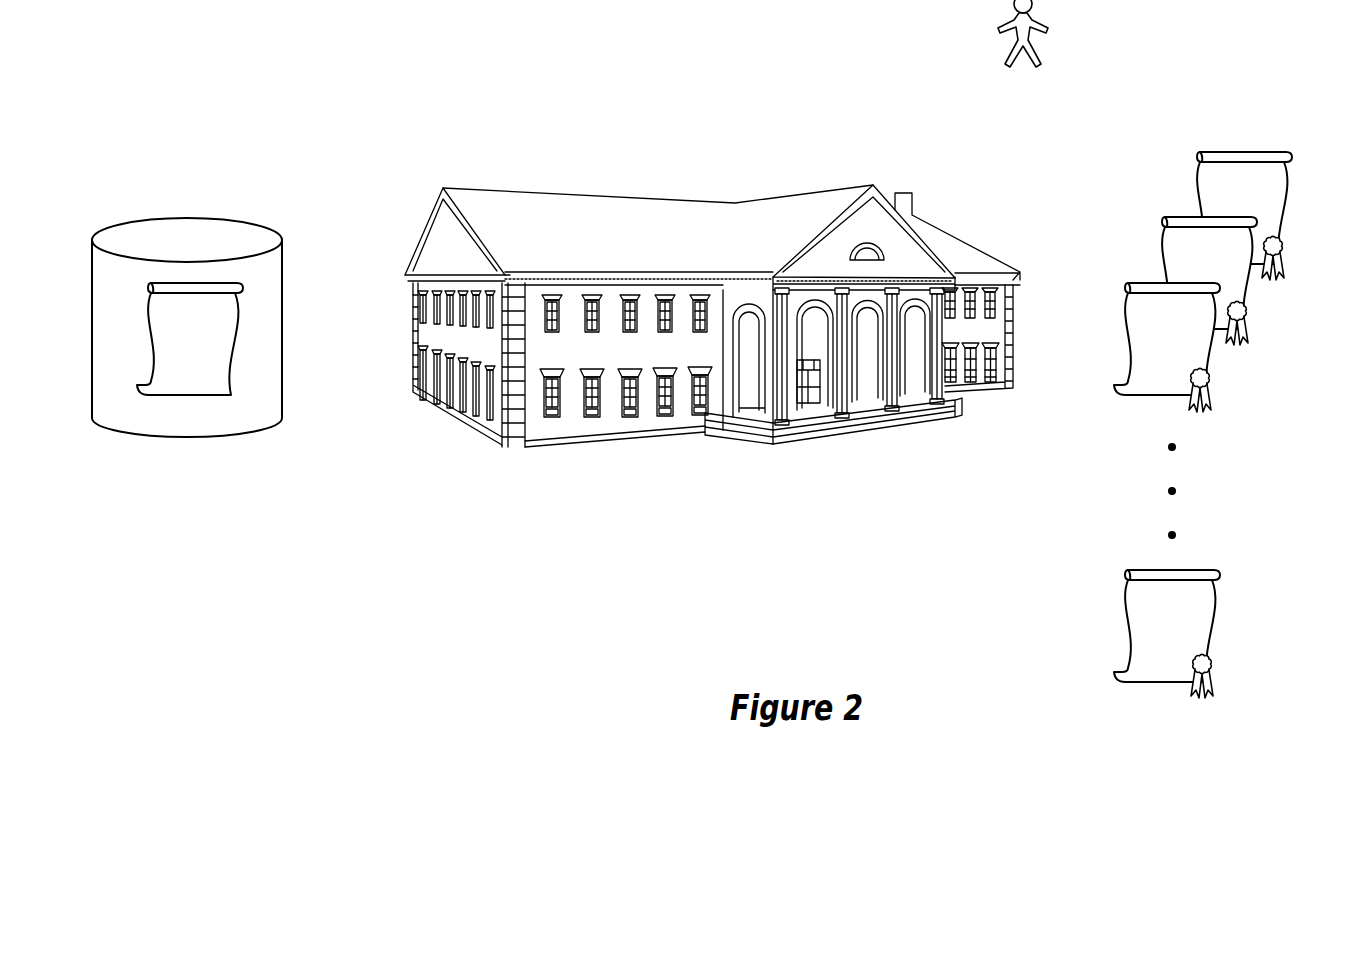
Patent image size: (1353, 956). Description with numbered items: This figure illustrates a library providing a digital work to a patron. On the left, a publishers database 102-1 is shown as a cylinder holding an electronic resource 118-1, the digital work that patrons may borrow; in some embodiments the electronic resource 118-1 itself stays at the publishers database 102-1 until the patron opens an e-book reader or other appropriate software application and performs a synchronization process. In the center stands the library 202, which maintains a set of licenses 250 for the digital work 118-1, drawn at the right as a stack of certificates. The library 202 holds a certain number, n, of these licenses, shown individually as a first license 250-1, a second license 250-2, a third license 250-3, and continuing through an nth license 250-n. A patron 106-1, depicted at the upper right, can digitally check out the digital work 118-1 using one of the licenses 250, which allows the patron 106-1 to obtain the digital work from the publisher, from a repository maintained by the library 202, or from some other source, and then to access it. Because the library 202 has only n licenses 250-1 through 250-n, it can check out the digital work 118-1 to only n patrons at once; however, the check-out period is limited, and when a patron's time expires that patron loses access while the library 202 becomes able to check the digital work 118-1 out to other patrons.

The publishers database 102-1 is at (187, 304).
The electronic resource 118-1 is at (215, 326).
The library 202 is at (587, 208).
The patron 106-1 is at (1058, 32).
The licenses 250 is at (1298, 130).
The first license 250-1 is at (1267, 194).
The second license 250-2 is at (1230, 259).
The third license 250-3 is at (1196, 326).
The nth license 250-n is at (1195, 615).